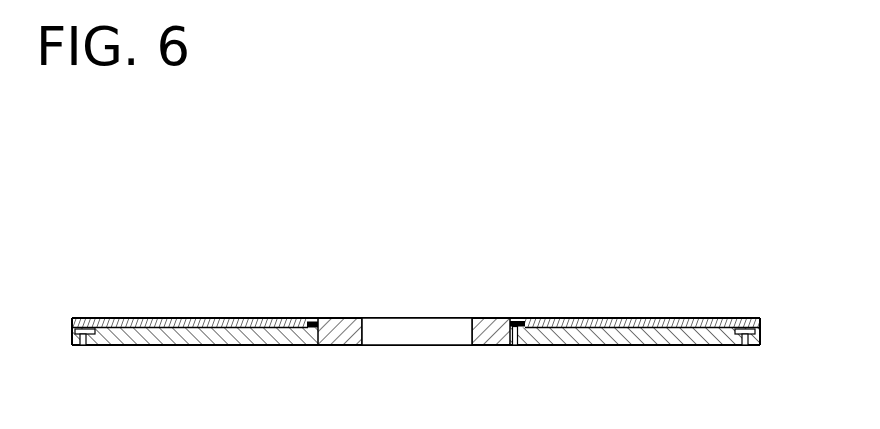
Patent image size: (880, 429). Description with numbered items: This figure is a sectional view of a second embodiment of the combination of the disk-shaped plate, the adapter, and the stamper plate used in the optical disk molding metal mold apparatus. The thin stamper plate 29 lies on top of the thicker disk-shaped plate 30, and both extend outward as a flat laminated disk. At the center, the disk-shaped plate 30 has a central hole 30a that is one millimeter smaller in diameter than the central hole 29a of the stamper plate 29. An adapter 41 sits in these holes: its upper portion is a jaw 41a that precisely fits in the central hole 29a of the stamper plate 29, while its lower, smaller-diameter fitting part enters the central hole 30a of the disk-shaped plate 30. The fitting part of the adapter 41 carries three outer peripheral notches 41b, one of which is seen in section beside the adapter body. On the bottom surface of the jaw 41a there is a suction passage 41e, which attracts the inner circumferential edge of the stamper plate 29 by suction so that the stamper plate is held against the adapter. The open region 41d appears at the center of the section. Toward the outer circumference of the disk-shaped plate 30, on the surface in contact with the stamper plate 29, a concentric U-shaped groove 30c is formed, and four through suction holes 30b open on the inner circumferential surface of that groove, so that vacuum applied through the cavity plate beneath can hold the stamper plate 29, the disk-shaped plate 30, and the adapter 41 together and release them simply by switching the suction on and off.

The stamper plate 29 is at (207, 318).
The central hole of the stamper plate 29a is at (320, 318).
The disk-shaped plate 30 is at (163, 345).
The central hole of the disk-shaped plate 30a is at (320, 345).
The through suction holes 30b is at (745, 345).
The concentric U-shaped groove 30c is at (748, 318).
The adapter 41 is at (483, 345).
The jaw 41a is at (530, 318).
The outer peripheral notches 41b is at (513, 345).
The central opening 41d is at (372, 318).
The suction passage 41e is at (523, 345).